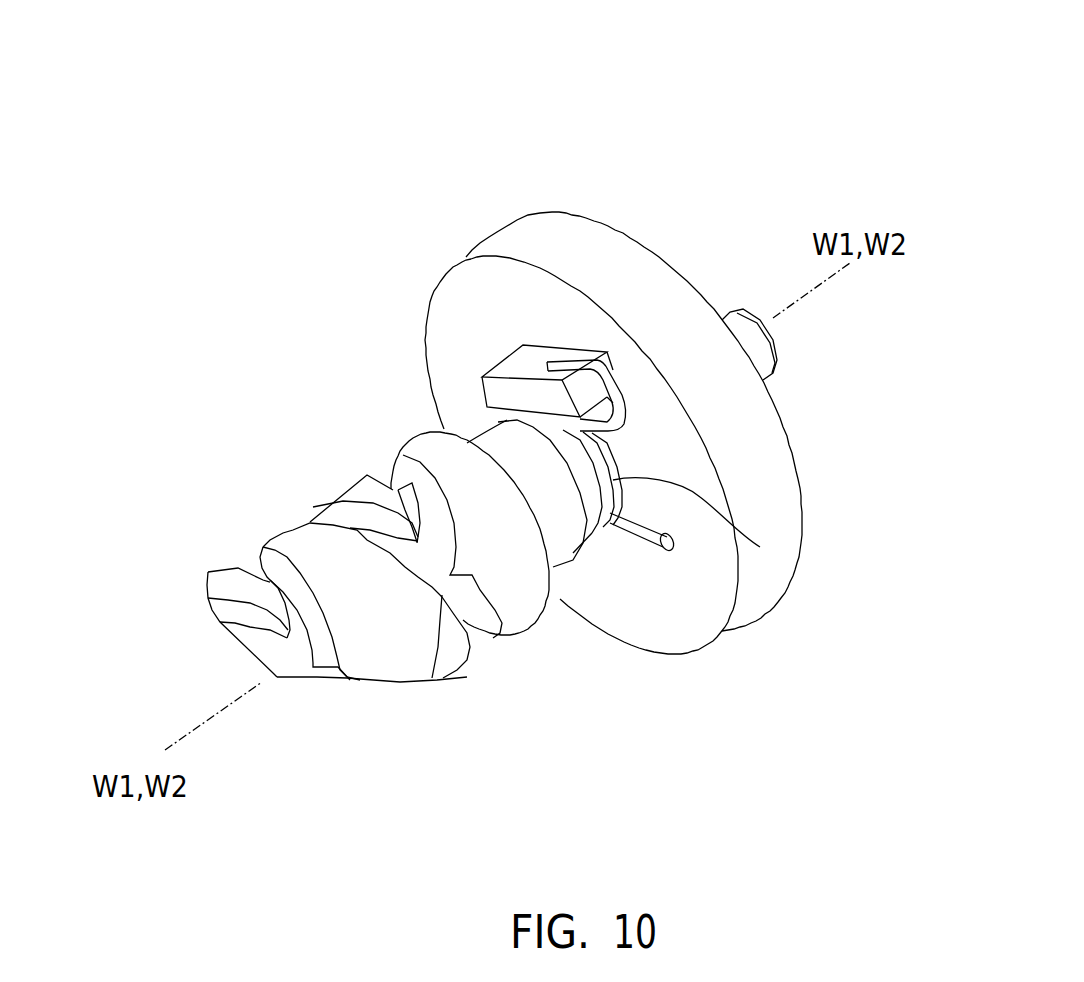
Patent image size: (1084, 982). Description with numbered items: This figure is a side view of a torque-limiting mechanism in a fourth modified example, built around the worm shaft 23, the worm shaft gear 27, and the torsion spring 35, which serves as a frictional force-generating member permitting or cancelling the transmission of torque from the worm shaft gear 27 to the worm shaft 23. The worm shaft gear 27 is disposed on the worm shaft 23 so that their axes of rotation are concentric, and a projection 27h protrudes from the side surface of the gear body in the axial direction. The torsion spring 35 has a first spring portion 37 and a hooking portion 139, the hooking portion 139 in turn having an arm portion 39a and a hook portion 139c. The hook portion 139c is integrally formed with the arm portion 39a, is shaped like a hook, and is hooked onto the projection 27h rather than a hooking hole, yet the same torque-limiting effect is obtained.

The worm shaft 23 is at (277, 509).
The worm shaft gear 27 is at (503, 201).
The projection 27h is at (517, 363).
The torsion spring 35 is at (601, 548).
The first spring portion 37 is at (760, 547).
The hooking portion 139 is at (668, 53).
The hook portion 139c is at (608, 357).
The arm portion 39a is at (610, 457).